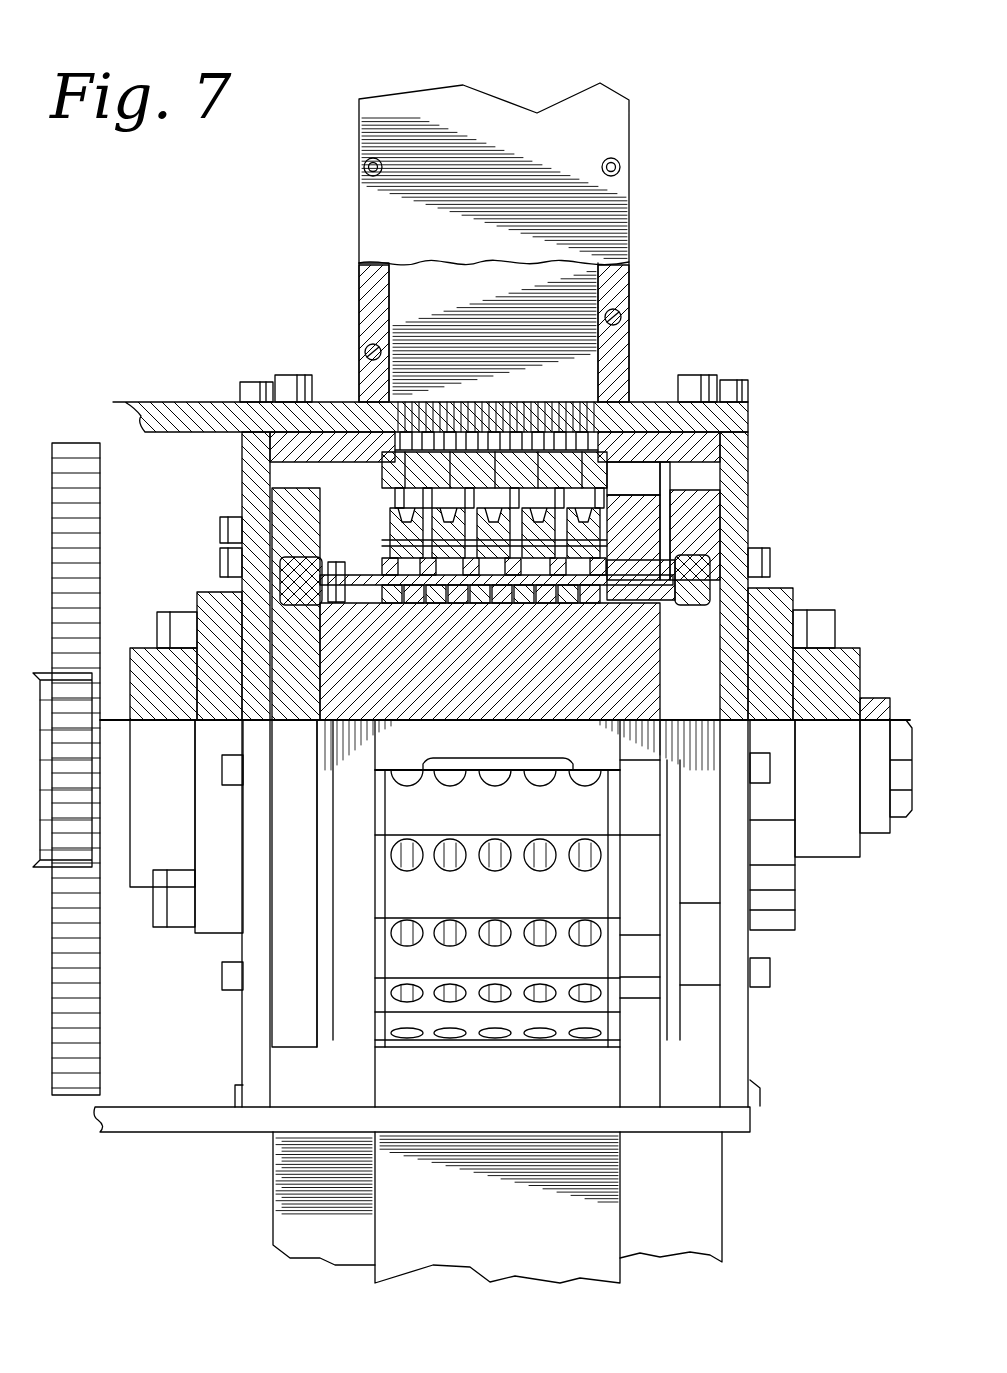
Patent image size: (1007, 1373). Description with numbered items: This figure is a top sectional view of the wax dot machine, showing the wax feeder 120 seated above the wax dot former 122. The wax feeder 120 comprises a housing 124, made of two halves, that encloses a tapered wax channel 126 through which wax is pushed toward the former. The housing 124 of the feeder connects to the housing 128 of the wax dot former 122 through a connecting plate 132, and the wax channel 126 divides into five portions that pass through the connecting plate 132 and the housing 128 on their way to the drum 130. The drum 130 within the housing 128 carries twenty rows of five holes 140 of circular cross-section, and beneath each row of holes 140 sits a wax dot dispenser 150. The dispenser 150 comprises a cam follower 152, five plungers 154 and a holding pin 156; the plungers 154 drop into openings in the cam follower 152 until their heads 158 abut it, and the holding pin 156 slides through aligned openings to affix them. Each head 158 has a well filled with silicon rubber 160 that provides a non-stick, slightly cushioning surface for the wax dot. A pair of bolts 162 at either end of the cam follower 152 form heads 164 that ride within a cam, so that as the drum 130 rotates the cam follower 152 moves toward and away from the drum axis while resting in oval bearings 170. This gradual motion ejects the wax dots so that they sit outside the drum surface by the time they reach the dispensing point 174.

The wax feeder 120 is at (630, 66).
The wax dot former 122 is at (133, 370).
The housing 124 is at (436, 248).
The wax channel 126 is at (476, 297).
The housing 128 is at (743, 453).
The drum 130 is at (507, 1057).
The connecting plate 132 is at (652, 410).
The holes 140 is at (405, 497).
The wax dot dispenser 150 is at (610, 614).
The cam follower 152 is at (352, 593).
The plungers 154 is at (408, 547).
The holding pin 156 is at (515, 603).
The head 158 is at (390, 523).
The silicon rubber 160 is at (390, 512).
The bolts 162 is at (365, 592).
The heads 164 is at (302, 577).
The oval bearings 170 is at (722, 543).
The dispensing point 174 is at (672, 645).